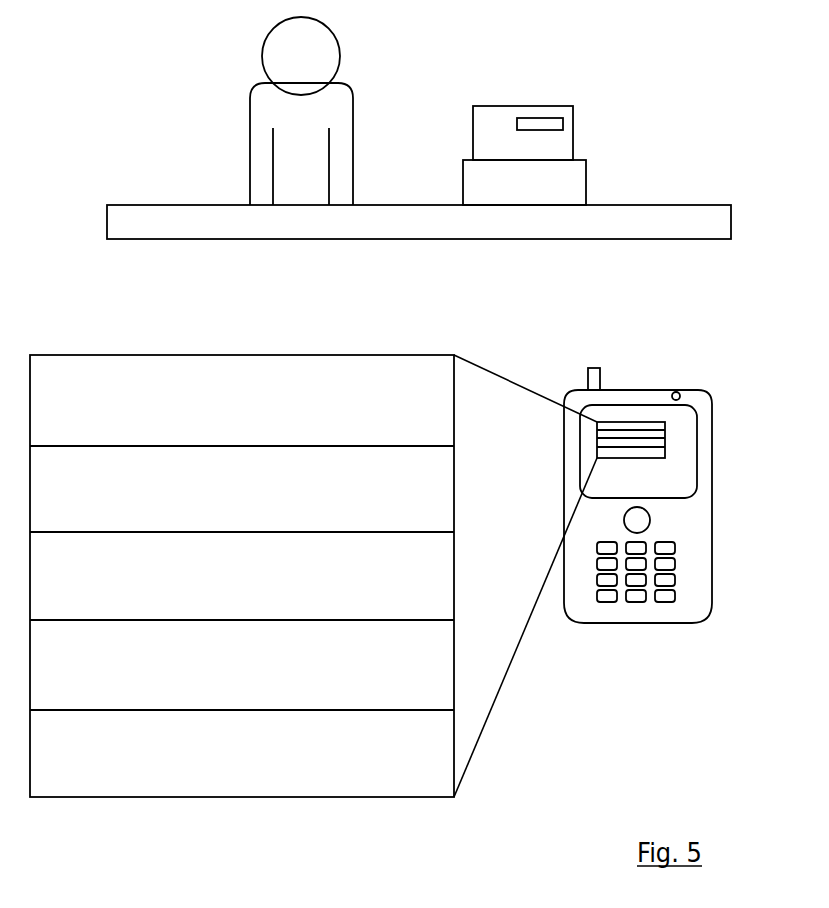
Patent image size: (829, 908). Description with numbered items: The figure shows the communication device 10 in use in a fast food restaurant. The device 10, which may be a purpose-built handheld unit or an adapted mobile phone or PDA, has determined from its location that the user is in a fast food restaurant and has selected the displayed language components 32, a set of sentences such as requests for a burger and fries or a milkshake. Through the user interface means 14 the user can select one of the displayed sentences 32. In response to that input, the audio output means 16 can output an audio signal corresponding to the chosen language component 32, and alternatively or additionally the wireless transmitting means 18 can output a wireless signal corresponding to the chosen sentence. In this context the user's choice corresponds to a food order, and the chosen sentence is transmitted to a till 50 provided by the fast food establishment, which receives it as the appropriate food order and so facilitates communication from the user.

The communication device 10 is at (712, 447).
The user interface means 14 is at (675, 578).
The audio output means 16 is at (680, 392).
The wireless transmitting means 18 is at (600, 368).
The language components 32 is at (289, 797).
The till 50 is at (573, 139).